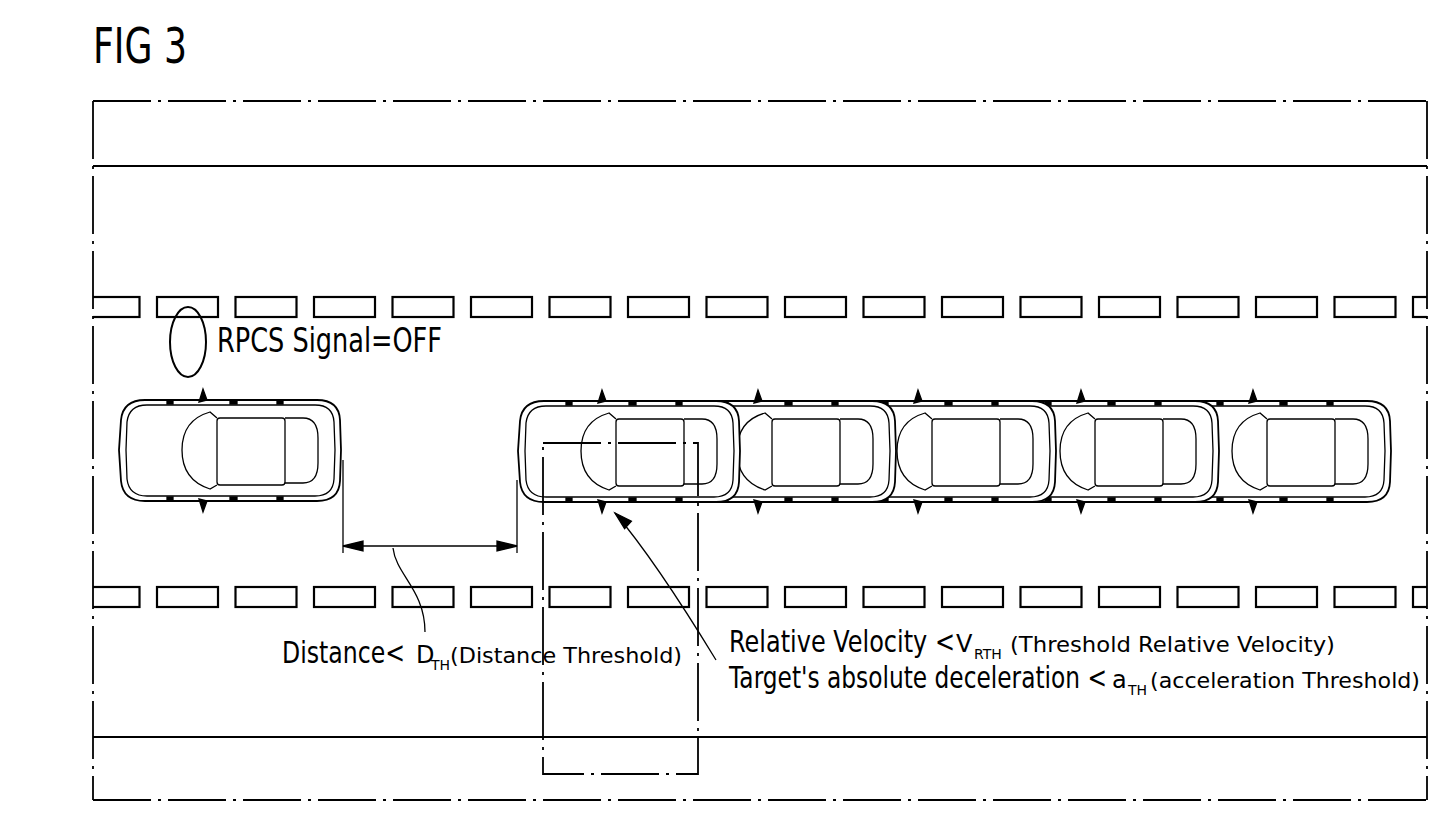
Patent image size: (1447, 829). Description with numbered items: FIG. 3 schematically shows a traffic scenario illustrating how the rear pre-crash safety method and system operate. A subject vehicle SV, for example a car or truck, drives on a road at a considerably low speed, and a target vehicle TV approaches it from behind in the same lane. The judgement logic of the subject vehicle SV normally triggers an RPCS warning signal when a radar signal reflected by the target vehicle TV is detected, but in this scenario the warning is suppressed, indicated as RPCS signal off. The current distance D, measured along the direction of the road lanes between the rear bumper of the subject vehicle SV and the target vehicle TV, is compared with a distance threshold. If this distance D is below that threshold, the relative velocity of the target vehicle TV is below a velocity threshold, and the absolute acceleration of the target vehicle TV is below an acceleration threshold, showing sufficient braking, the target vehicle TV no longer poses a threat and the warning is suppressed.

The subject vehicle SV is at (262, 494).
The target vehicle TV is at (656, 404).
The current distance D is at (433, 543).